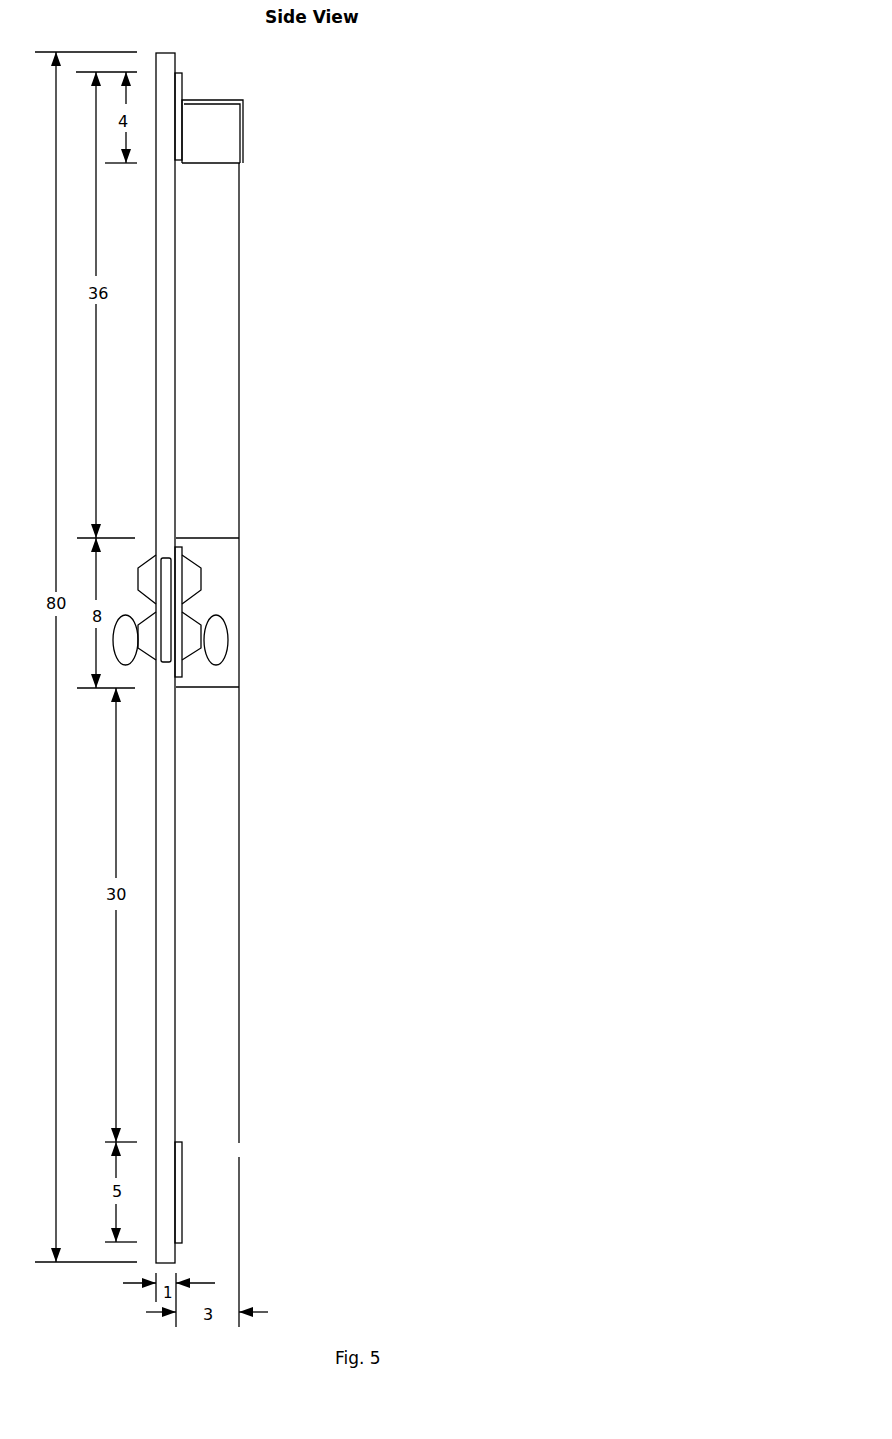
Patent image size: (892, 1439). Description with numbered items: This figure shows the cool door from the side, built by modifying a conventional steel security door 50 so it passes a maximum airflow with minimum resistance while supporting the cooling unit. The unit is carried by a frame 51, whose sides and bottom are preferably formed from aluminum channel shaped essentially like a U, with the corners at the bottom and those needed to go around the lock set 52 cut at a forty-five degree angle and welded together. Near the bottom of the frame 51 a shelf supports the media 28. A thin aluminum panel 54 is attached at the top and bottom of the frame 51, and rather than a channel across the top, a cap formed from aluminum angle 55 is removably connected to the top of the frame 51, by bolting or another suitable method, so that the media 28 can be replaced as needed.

The media 28 is at (253, 498).
The steel security door 50 is at (168, 403).
The frame 51 is at (208, 723).
The lock set 52 is at (211, 603).
The aluminum panel 54 is at (182, 85).
The aluminum angle 55 is at (243, 121).